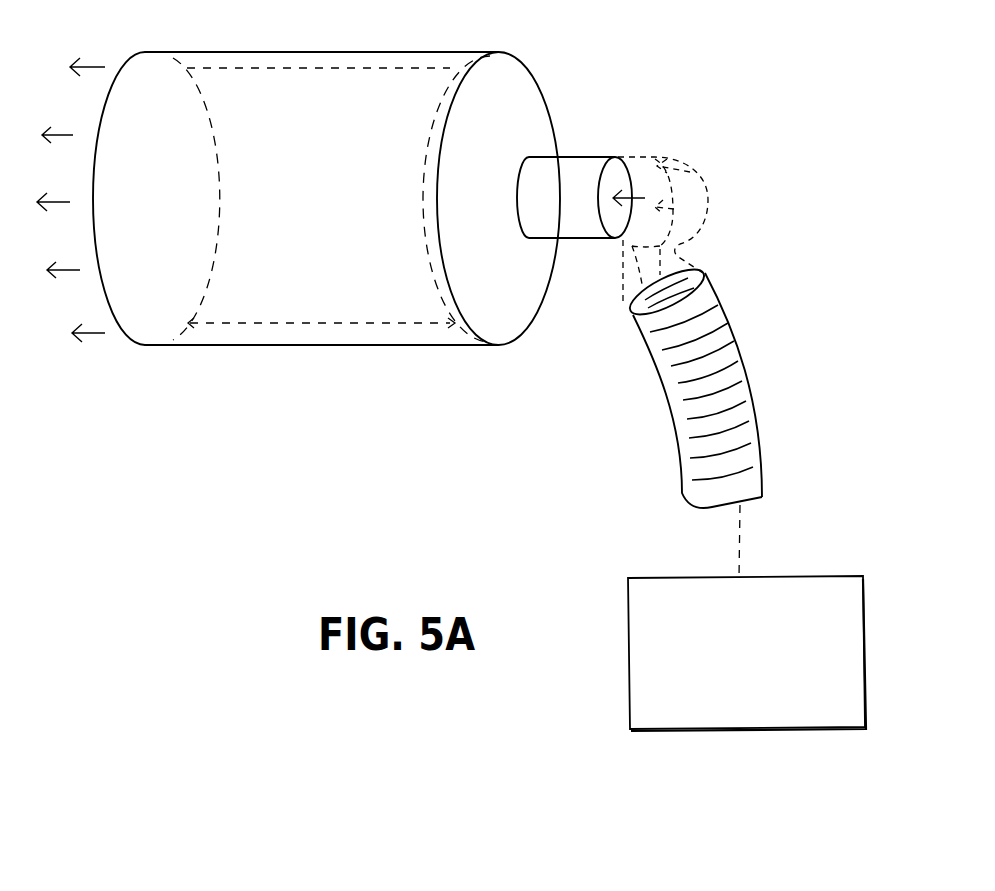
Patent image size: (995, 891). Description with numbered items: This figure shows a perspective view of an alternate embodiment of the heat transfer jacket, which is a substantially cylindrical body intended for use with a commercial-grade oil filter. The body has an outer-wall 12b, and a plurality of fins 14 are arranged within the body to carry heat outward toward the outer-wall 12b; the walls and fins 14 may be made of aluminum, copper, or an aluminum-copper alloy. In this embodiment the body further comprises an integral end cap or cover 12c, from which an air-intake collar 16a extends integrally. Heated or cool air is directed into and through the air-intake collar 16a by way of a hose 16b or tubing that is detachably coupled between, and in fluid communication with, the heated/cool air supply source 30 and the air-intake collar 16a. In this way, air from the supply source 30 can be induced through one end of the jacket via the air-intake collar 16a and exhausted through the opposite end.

The outer-wall 12b is at (310, 209).
The integral end cap or cover 12c is at (528, 85).
The fins 14 is at (316, 347).
The air-intake collar 16a is at (578, 157).
The hose 16b is at (680, 442).
The heated/cool air supply source 30 is at (762, 708).